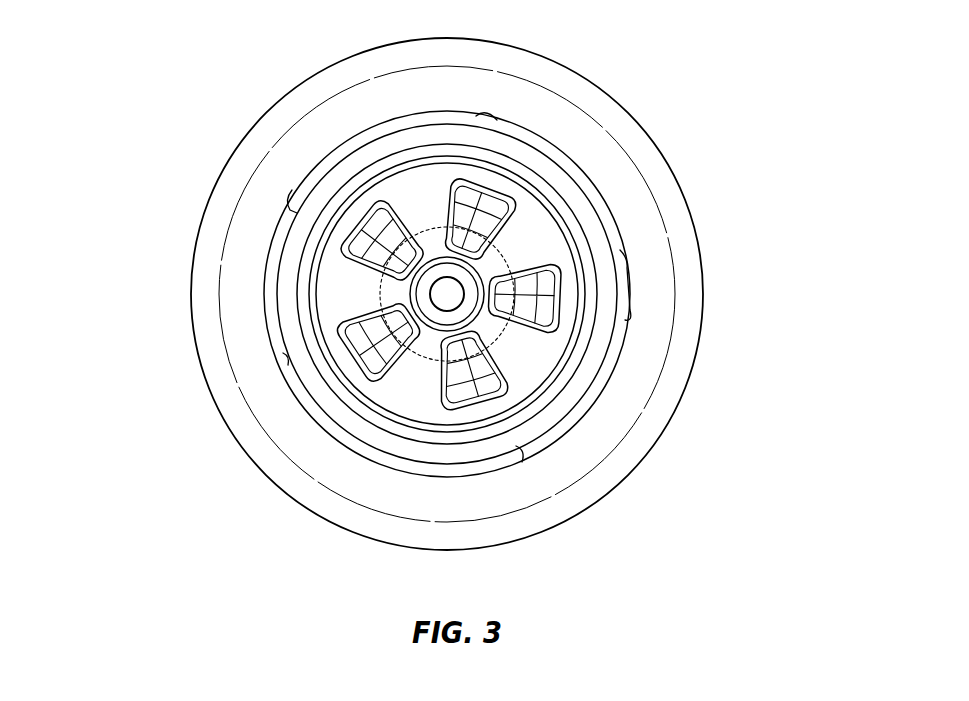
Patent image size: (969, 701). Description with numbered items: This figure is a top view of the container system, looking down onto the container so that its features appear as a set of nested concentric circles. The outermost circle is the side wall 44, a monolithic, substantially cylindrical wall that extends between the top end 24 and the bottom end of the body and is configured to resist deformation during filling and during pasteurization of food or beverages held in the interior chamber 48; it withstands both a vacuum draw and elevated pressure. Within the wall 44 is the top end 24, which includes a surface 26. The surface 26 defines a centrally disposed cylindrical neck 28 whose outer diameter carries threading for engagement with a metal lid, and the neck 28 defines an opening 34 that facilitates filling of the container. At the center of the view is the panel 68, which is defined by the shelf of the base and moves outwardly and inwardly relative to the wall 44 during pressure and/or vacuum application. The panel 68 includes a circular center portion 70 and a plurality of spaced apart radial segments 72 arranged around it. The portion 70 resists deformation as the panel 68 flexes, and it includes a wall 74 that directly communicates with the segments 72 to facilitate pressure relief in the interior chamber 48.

The top end 24 is at (150, 50).
The surface 26 is at (632, 317).
The cylindrical neck 28 is at (283, 353).
The opening 34 is at (525, 358).
The wall 44 is at (600, 87).
The interior chamber 48 is at (418, 202).
The panel 68 is at (347, 287).
The circular center portion 70 is at (447, 295).
The radial segments 72 is at (478, 195).
The wall 74 is at (465, 278).